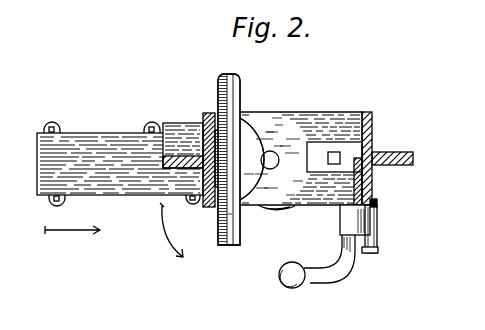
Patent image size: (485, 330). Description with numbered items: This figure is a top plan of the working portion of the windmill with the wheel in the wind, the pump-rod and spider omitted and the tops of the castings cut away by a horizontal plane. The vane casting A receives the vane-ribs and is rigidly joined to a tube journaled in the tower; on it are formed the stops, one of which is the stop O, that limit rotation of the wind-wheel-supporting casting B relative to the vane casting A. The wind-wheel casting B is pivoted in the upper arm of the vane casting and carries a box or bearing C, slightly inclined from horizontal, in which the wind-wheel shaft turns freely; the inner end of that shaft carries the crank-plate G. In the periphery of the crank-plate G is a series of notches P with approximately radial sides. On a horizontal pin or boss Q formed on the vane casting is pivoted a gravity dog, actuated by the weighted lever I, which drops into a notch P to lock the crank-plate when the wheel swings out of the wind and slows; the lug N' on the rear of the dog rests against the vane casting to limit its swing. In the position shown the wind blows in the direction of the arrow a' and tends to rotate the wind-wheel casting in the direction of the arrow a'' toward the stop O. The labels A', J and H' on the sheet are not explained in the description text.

The box or bearing C is at (117, 155).
The wind-wheel-supporting casting B is at (204, 118).
The crank-plate G is at (236, 86).
The casing body A' is at (301, 149).
The vane casting A is at (383, 158).
The window opening J is at (334, 157).
The lug N' is at (386, 206).
The pipe box H' is at (355, 220).
The weighted lever I is at (278, 299).
The horizontal pin or boss Q is at (376, 256).
The notches P is at (238, 218).
The stop O is at (276, 217).
The arrow indicating wind direction a' is at (72, 223).
The arrow indicating rotation of wind-wheel casting a'' is at (172, 230).